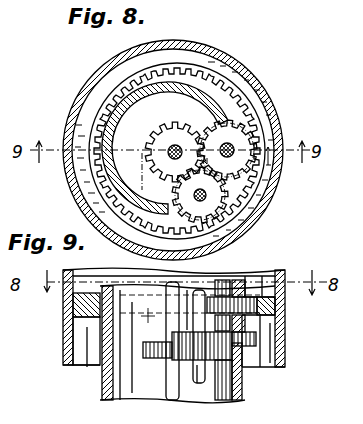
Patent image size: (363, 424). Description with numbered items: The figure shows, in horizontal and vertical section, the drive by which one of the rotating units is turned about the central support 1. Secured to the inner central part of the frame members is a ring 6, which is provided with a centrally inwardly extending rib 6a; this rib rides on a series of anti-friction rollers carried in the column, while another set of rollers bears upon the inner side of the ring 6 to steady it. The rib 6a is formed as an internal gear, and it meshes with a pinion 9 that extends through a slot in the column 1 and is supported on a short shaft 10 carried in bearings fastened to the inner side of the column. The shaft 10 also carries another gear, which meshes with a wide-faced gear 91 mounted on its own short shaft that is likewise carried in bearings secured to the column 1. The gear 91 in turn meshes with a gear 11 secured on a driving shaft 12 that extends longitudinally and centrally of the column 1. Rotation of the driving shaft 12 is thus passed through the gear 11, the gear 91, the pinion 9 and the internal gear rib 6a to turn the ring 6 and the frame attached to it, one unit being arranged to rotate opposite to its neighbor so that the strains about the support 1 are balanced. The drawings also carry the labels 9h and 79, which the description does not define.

In FIG. 8, the central support 1 is at (214, 100).
In FIG. 8, the ring 6 is at (276, 105).
In FIG. 9, the ring 6 is at (285, 348).
In FIG. 8, the inwardly extending rib 6a is at (222, 72).
In FIG. 9, the inwardly extending rib 6a is at (65, 308).
In FIG. 8, the pinion 9 is at (227, 148).
In FIG. 9, the pinion 9 is at (284, 308).
In FIG. 8, the second planet gear 9h is at (203, 197).
In FIG. 9, the second planet gear 9h is at (203, 377).
In FIG. 8, the gear 91 is at (182, 188).
In FIG. 9, the gear 91 is at (242, 350).
In FIG. 8, the short shaft 10 is at (257, 138).
In FIG. 9, the short shaft 10 is at (237, 372).
In FIG. 8, the gear 11 is at (148, 163).
In FIG. 9, the gear 11 is at (143, 349).
In FIG. 8, the driving shaft 12 is at (175, 150).
In FIG. 9, the driving shaft 12 is at (172, 377).
In FIG. 9, the shaft 79 is at (255, 338).